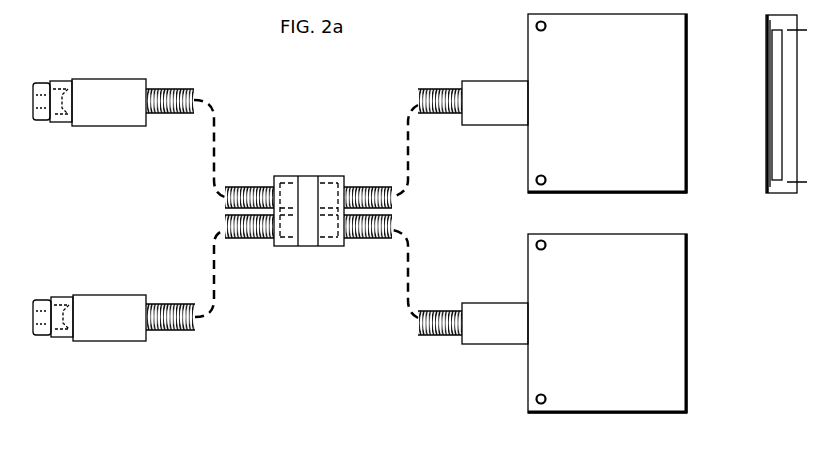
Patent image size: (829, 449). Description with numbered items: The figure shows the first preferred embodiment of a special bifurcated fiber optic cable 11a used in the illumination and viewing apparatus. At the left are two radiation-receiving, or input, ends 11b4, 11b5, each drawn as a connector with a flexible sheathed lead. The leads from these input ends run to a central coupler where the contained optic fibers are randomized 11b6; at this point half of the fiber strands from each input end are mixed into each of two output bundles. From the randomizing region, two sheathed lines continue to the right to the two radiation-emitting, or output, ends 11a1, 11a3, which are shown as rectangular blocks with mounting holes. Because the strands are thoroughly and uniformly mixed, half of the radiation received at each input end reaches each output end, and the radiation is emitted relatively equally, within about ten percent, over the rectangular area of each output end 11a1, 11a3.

The bifurcated fiber optic cable 11a is at (355, 345).
The radiation-emitting end 11a1 is at (660, 124).
The radiation-emitting end 11a3 is at (665, 311).
The radiation-receiving end 11b4 is at (123, 80).
The radiation-receiving end 11b5 is at (108, 330).
The randomizing region 11b6 is at (291, 183).